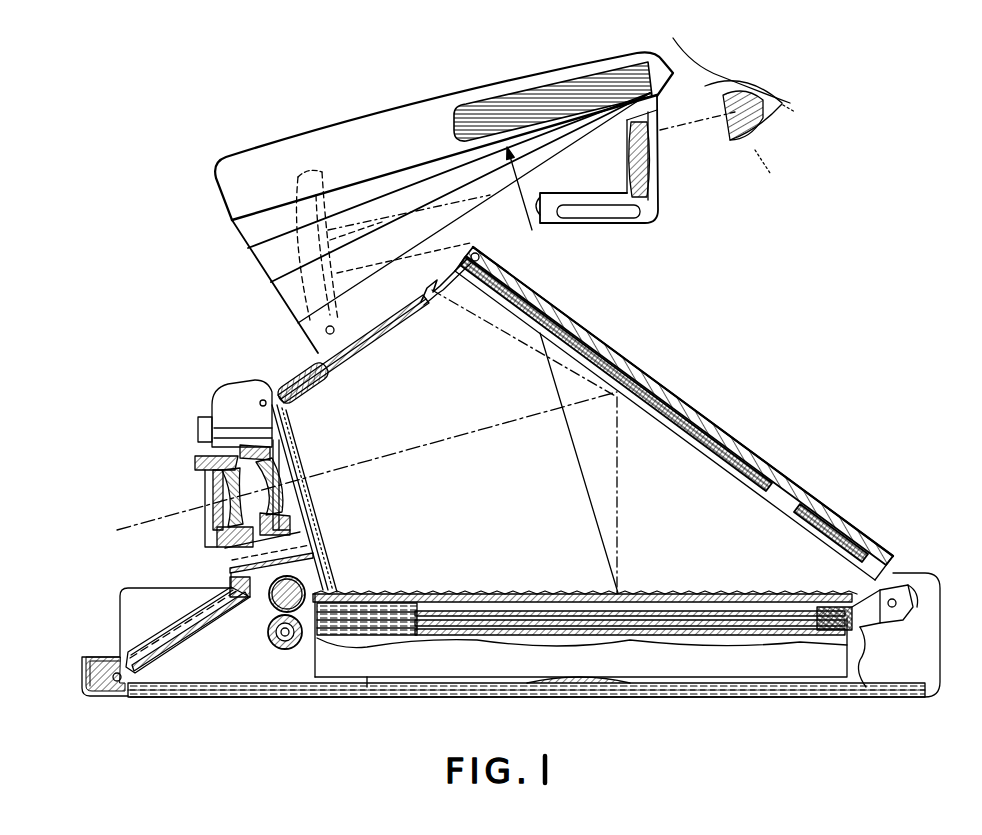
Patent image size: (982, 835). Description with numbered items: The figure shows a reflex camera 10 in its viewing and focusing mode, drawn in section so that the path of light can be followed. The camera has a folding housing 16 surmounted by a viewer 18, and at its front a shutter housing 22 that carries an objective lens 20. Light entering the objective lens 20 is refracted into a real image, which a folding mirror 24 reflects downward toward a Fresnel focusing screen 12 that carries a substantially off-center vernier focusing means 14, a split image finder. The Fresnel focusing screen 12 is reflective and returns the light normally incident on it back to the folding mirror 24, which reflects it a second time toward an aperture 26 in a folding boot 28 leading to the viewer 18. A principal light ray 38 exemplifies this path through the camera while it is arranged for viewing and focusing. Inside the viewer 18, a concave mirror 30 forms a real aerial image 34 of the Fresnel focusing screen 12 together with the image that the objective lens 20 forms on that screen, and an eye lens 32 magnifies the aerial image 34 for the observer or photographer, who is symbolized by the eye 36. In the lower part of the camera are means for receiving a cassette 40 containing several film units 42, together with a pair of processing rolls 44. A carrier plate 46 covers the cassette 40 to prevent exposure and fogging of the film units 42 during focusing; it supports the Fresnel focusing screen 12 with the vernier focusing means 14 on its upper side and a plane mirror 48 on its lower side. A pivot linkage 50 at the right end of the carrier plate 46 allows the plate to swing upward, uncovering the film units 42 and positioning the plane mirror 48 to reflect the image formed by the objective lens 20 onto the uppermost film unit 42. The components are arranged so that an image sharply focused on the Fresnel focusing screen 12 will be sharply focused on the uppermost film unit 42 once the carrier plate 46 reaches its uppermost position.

The reflex camera 10 is at (780, 418).
The Fresnel focusing screen 12 is at (488, 583).
The vernier focusing means 14 is at (555, 592).
The folding housing 16 is at (637, 368).
The viewer 18 is at (313, 126).
The objective lens 20 is at (222, 522).
The shutter housing 22 is at (210, 402).
The folding mirror 24 is at (652, 424).
The aperture 26 is at (438, 297).
The folding boot 28 is at (313, 367).
The concave mirror 30 is at (491, 208).
The eye lens 32 is at (655, 172).
The real aerial image 34 is at (538, 195).
The eye 36 is at (748, 142).
The principal light ray 38 is at (425, 445).
The cassette 40 is at (418, 677).
The film units 42 is at (450, 634).
The processing rolls 44 is at (268, 638).
The carrier plate 46 is at (741, 603).
The plane mirror 48 is at (708, 611).
The pivot linkage 50 is at (905, 603).